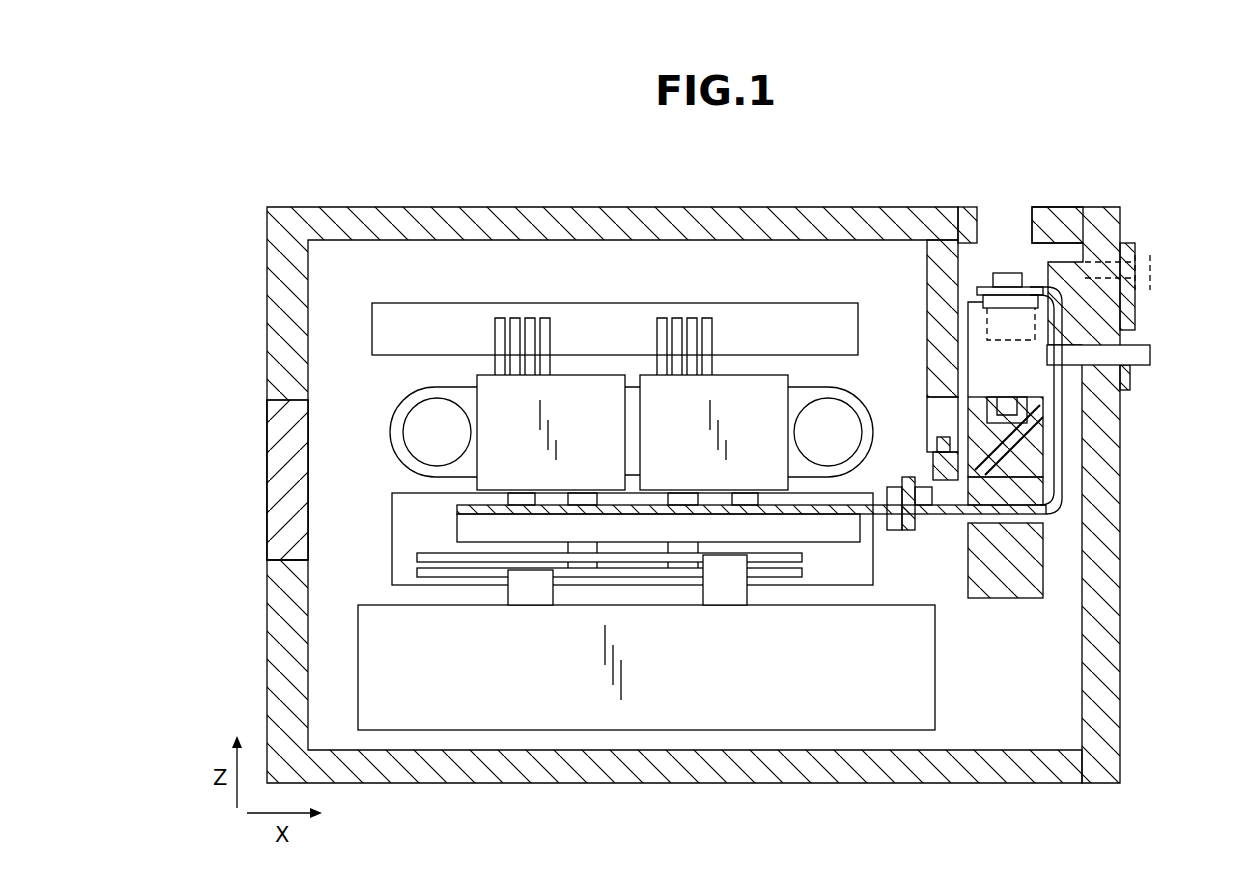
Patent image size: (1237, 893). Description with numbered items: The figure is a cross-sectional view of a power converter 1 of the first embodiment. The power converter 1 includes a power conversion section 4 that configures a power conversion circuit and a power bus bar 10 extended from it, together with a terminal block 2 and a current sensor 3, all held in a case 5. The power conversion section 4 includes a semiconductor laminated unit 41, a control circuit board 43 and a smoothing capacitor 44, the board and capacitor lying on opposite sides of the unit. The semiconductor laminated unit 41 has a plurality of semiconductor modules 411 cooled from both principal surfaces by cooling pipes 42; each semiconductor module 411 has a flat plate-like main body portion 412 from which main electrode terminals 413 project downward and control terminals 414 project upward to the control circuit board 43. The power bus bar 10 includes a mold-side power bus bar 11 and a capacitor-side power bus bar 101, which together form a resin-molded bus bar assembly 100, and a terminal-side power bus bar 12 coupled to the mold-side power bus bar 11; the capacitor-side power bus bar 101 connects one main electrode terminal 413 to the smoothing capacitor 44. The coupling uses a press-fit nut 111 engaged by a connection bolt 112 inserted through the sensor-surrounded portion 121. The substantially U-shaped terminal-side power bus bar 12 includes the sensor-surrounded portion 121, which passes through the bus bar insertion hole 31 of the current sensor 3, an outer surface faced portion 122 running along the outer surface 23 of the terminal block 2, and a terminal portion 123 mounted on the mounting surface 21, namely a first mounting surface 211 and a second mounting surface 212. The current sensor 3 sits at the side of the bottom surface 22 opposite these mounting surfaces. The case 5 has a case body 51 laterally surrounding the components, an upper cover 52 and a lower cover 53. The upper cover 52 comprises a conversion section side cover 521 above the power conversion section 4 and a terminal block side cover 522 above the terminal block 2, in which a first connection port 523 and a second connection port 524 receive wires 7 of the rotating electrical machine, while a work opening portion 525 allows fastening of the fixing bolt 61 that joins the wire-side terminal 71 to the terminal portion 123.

The power converter 1 is at (283, 175).
The terminal block 2 is at (907, 308).
The current sensor 3 is at (1015, 573).
The power conversion section 4 is at (576, 487).
The case 5 is at (644, 470).
The wires 7 is at (1140, 268).
The power bus bar 10 is at (823, 507).
The mold-side power bus bar 11 is at (658, 676).
The terminal-side power bus bar 12 is at (812, 688).
The mounting surface 21 is at (907, 294).
The bottom surface 22 is at (1045, 509).
The outer surface 23 is at (1043, 483).
The bus bar insertion hole 31 is at (1043, 527).
The semiconductor laminated unit 41 is at (378, 405).
The cooling pipes 42 is at (470, 390).
The control circuit board 43 is at (637, 317).
The smoothing capacitor 44 is at (857, 713).
The case body 51 is at (280, 478).
The upper cover 52 is at (753, 440).
The lower cover 53 is at (288, 660).
The fixing bolt 61 is at (997, 280).
The wire-side terminal 71 is at (1040, 290).
The bus bar assembly 100 is at (402, 594).
The capacitor-side power bus bar 101 is at (462, 578).
The press-fit nut 111 is at (890, 483).
The connection bolt 112 is at (915, 535).
The sensor-surrounded portion 121 is at (993, 525).
The outer surface faced portion 122 is at (1065, 335).
The terminal portion 123 is at (1005, 278).
The first mounting surface 211 is at (935, 400).
The second mounting surface 212 is at (960, 324).
The semiconductor modules 411 is at (592, 366).
The main body portion 412 is at (487, 383).
The main electrode terminal 413 is at (520, 505).
The control terminal 414 is at (513, 323).
The conversion section side cover 521 is at (340, 215).
The terminal block side cover 522 is at (1085, 260).
The first connection port 523 is at (1137, 255).
The second connection port 524 is at (1128, 345).
The work opening portion 525 is at (1040, 222).